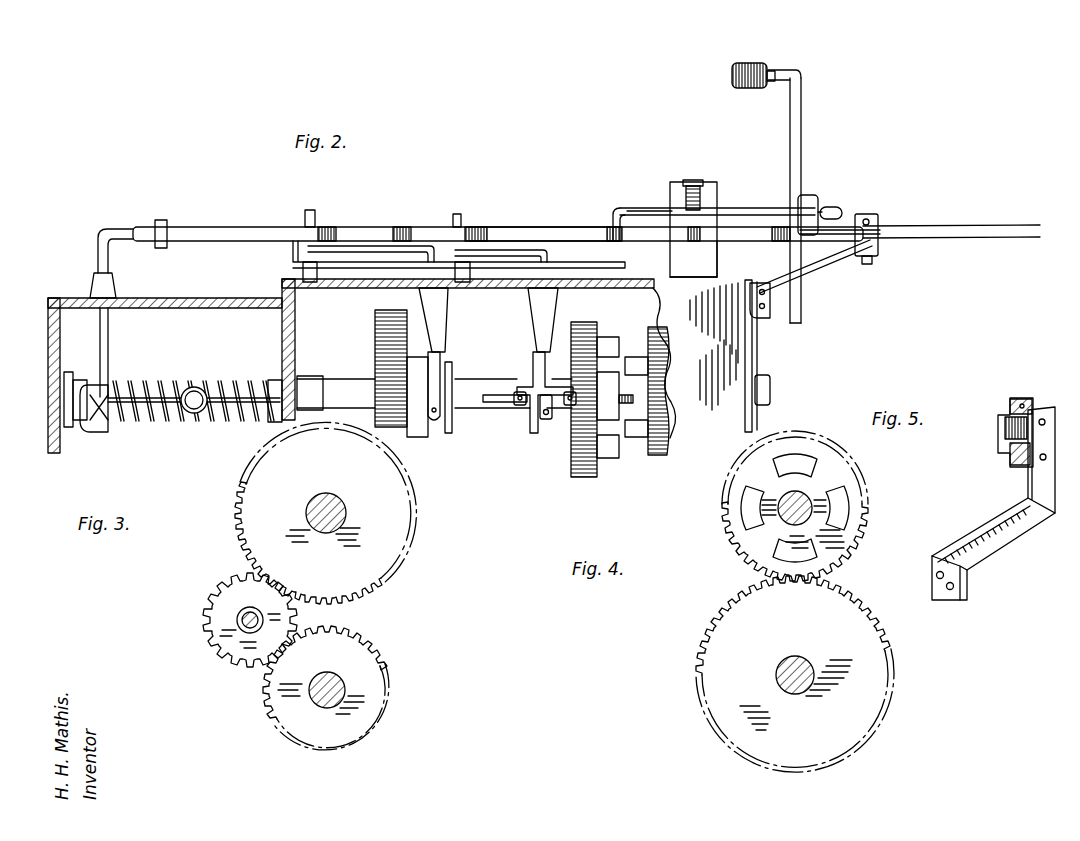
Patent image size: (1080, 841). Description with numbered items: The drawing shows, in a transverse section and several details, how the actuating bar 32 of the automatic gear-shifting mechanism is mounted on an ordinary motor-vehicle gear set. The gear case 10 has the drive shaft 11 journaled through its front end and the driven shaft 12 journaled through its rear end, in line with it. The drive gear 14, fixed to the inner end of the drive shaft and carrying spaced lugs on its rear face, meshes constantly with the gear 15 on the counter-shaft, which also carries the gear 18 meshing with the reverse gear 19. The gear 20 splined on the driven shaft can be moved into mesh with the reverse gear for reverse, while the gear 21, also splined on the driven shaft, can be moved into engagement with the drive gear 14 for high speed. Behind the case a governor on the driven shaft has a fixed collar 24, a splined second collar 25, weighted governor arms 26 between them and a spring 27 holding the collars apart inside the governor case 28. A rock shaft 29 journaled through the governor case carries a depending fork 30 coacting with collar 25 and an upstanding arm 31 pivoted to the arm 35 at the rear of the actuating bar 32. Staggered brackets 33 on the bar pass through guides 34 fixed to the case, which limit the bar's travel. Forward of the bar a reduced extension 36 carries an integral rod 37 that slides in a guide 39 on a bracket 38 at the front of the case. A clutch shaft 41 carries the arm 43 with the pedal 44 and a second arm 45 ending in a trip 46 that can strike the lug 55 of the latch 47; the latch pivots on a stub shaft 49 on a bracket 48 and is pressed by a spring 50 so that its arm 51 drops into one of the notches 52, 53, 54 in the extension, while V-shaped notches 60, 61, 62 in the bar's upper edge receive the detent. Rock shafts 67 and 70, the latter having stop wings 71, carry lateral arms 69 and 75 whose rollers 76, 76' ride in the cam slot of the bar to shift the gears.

In FIG. 2, the gear case 10 is at (752, 362).
In FIG. 2, the drive shaft 11 is at (770, 392).
In FIG. 2, the driven shaft 12 is at (348, 390).
In FIG. 2, the drive gear 14 is at (658, 372).
In FIG. 4, the drive gear 14 is at (853, 488).
In FIG. 4, the gear 15 is at (795, 674).
In FIG. 3, the gear 18 is at (326, 688).
In FIG. 3, the reverse gear 19 is at (222, 652).
In FIG. 2, the gear 20 is at (375, 344).
In FIG. 3, the gear 20 is at (325, 513).
In FIG. 2, the gear 21 is at (590, 324).
In FIG. 2, the collar 24 is at (272, 378).
In FIG. 2, the second collar 25 is at (76, 430).
In FIG. 2, the weighted governor arms 26 is at (198, 386).
In FIG. 2, the spring 27 is at (150, 420).
In FIG. 2, the governor case 28 is at (184, 298).
In FIG. 2, the rock shaft 29 is at (110, 328).
In FIG. 2, the depending fork 30 is at (95, 412).
In FIG. 2, the upstanding arm 31 is at (103, 232).
In FIG. 2, the actuating bar 32 is at (545, 228).
In FIG. 2, the brackets 33 is at (292, 255).
In FIG. 2, the guides 34 is at (310, 290).
In FIG. 2, the arm 35 is at (228, 228).
In FIG. 2, the reduced extension 36 is at (735, 240).
In FIG. 2, the rod 37 is at (960, 227).
In FIG. 2, the bracket 38 is at (822, 254).
In FIG. 5, the bracket 38 is at (1020, 520).
In FIG. 2, the guide 39 is at (872, 225).
In FIG. 5, the guide 39 is at (1018, 398).
In FIG. 2, the clutch pedal shaft 41 is at (803, 312).
In FIG. 2, the upstanding arm 43 is at (795, 71).
In FIG. 2, the pedal 44 is at (752, 63).
In FIG. 2, the second arm 45 is at (810, 197).
In FIG. 2, the trip 46 is at (818, 210).
In FIG. 2, the latch 47 is at (757, 212).
In FIG. 2, the bracket 48 is at (717, 207).
In FIG. 2, the stub shaft 49 is at (692, 180).
In FIG. 2, the spring 50 is at (672, 210).
In FIG. 2, the arm 51 is at (618, 235).
In FIG. 2, the notch 52 is at (625, 240).
In FIG. 2, the notch 53 is at (694, 242).
In FIG. 2, the notch 54 is at (773, 240).
In FIG. 2, the lug 55 is at (842, 212).
In FIG. 2, the V-shaped notch 60 is at (330, 228).
In FIG. 2, the V-shaped notch 61 is at (405, 228).
In FIG. 2, the V-shaped notch 62 is at (480, 228).
In FIG. 2, the rock shaft 67 is at (442, 362).
In FIG. 2, the arm 69 is at (375, 248).
In FIG. 2, the rock shaft 70 is at (533, 371).
In FIG. 2, the stop wings 71 is at (520, 406).
In FIG. 2, the arm 75 is at (500, 252).
In FIG. 2, the roller 76 is at (332, 204).
In FIG. 2, the roller 76' is at (463, 204).